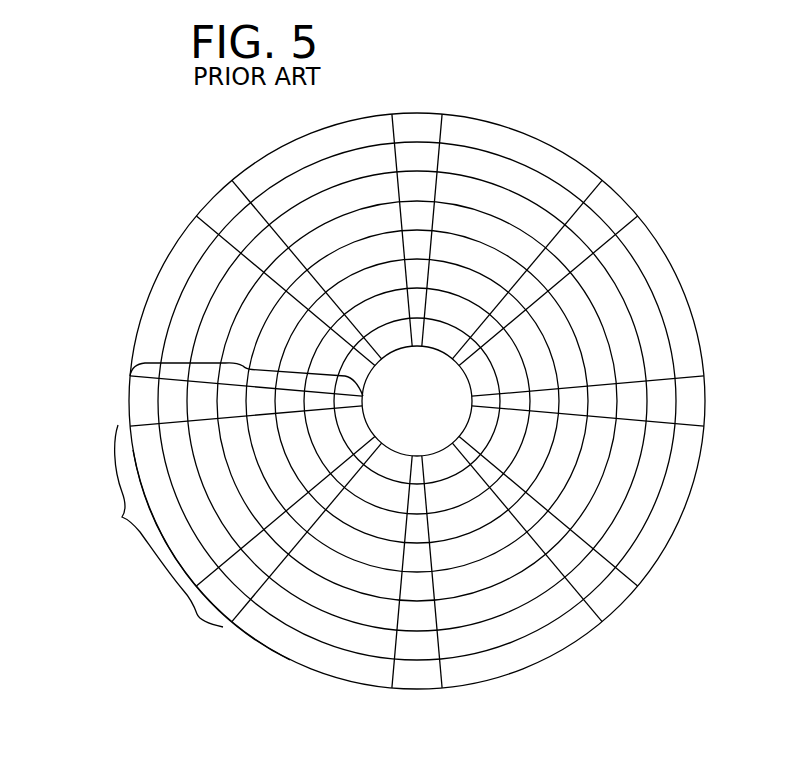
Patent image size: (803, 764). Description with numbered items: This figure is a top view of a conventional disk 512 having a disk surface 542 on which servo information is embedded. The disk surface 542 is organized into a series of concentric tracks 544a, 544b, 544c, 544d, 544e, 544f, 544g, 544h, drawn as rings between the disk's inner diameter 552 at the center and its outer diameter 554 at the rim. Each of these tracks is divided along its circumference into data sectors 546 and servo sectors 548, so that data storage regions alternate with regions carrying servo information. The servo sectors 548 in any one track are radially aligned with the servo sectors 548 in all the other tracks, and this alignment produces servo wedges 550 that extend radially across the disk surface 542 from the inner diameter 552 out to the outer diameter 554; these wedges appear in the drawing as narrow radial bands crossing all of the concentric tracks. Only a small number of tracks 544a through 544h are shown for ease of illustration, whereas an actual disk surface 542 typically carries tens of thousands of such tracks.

The disk 512 is at (284, 146).
The disk surface 542 is at (394, 205).
The concentric track 544a is at (483, 135).
The concentric track 544b is at (525, 182).
The concentric track 544c is at (523, 217).
The concentric track 544d is at (522, 245).
The concentric track 544e is at (510, 533).
The concentric track 544f is at (482, 510).
The concentric track 544g is at (458, 490).
The concentric track 544h is at (437, 467).
The data sectors 546 is at (122, 517).
The servo sectors 548 is at (197, 614).
The servo wedges 550 is at (247, 369).
The inner diameter 552 is at (373, 425).
The outer diameter 554 is at (282, 655).